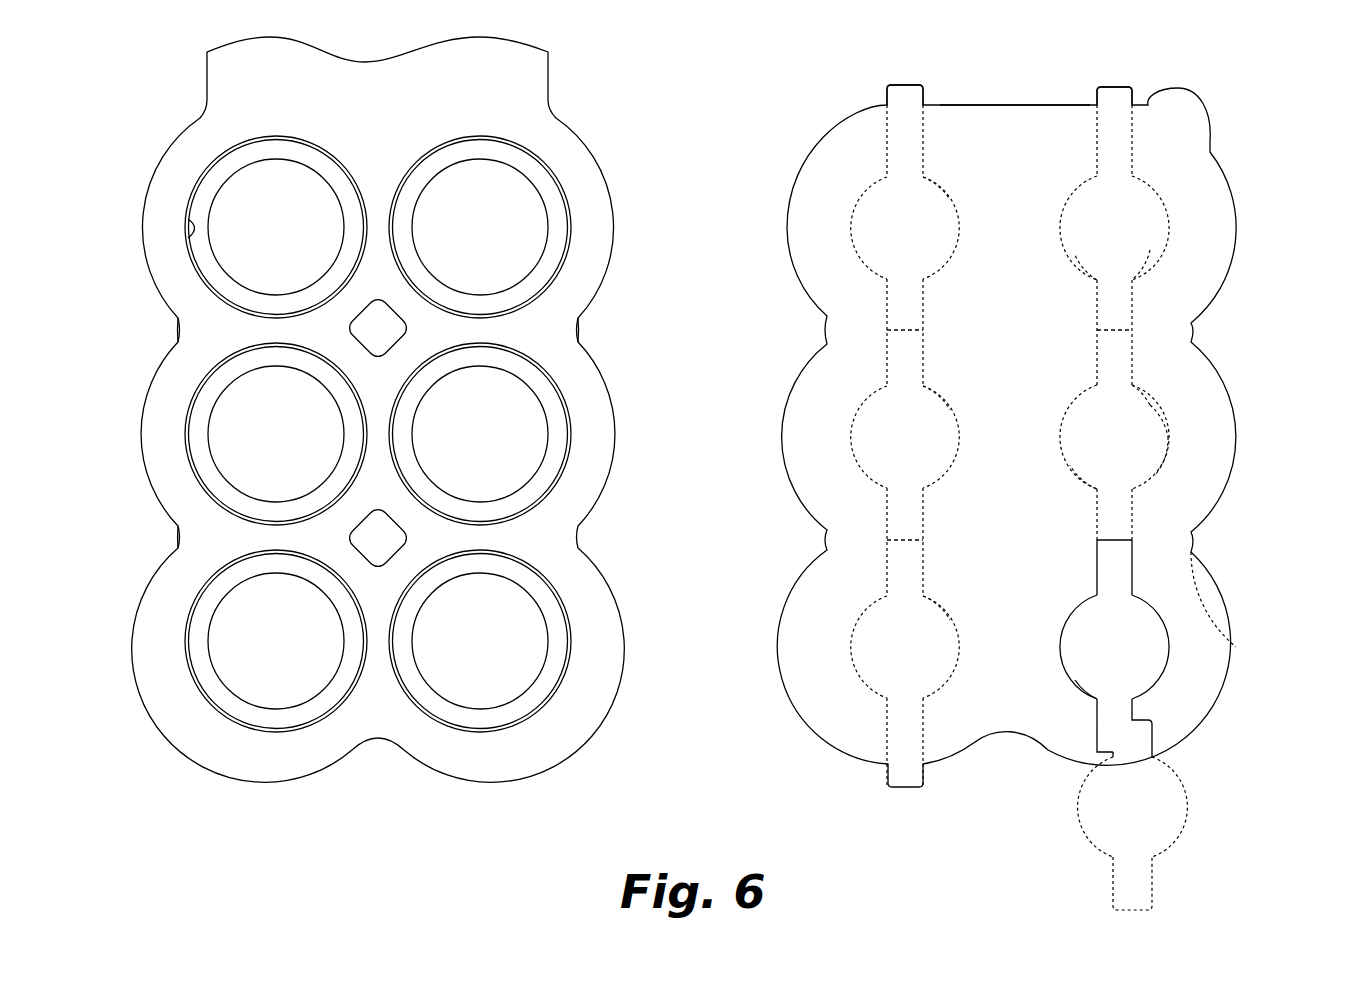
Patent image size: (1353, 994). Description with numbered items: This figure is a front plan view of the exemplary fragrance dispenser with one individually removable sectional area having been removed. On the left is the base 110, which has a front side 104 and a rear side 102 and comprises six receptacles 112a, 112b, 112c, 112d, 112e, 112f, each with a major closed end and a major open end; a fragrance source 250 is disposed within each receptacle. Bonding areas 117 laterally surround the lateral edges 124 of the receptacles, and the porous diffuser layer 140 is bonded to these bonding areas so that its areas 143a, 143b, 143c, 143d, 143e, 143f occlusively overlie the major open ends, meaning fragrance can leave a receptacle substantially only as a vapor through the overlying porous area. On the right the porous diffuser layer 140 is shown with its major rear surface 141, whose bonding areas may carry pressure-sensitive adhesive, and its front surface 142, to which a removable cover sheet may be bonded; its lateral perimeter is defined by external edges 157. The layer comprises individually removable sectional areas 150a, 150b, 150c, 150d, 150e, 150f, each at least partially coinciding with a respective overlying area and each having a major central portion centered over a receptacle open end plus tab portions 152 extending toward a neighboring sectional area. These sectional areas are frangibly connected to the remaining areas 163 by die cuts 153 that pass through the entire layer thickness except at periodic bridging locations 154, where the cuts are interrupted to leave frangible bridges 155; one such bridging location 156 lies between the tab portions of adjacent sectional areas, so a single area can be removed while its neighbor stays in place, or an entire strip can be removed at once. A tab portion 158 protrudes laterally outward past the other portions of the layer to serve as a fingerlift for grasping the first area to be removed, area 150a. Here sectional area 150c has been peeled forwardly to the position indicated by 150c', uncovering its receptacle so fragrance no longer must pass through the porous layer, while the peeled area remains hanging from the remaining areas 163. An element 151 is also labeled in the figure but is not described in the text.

The base 110 is at (578, 72).
The rear side 102 is at (218, 530).
The front side 104 is at (205, 340).
The bonding areas 117 is at (545, 333).
The lateral edges 124 is at (190, 225).
The fragrance source 250 is at (438, 195).
The receptacle 112a is at (450, 241).
The receptacle 112b is at (450, 448).
The receptacle 112c is at (450, 655).
The receptacle 112d is at (246, 241).
The receptacle 112e is at (246, 448).
The receptacle 112f is at (248, 655).
The porous diffuser layer 140 is at (1225, 94).
The major rear surface 141 is at (1013, 130).
The front surface 142 is at (955, 118).
The tab portion 158 is at (1113, 93).
The area 143a is at (1083, 242).
The area 143b is at (1083, 451).
The area 143c is at (1083, 661).
The area 143d is at (875, 242).
The area 143e is at (875, 451).
The area 143f is at (877, 661).
The individually removable sectional area 150a is at (1143, 250).
The individually removable sectional area 150b is at (1115, 385).
The individually removable sectional area 150c is at (1057, 702).
The position of removed sectional area 150c' is at (1183, 833).
The individually removable sectional area 150d is at (927, 193).
The individually removable sectional area 150e is at (935, 408).
The individually removable sectional area 150f is at (925, 607).
The trace portion 151 is at (1092, 250).
The tab portions 152 is at (1107, 155).
The die cuts 153 is at (1165, 438).
The periodic bridging locations 154 is at (1060, 475).
The frangible bridges 155 is at (1158, 402).
The bridging location 156 is at (1103, 540).
The external edges 157 is at (1224, 640).
The remaining areas 163 is at (1082, 578).